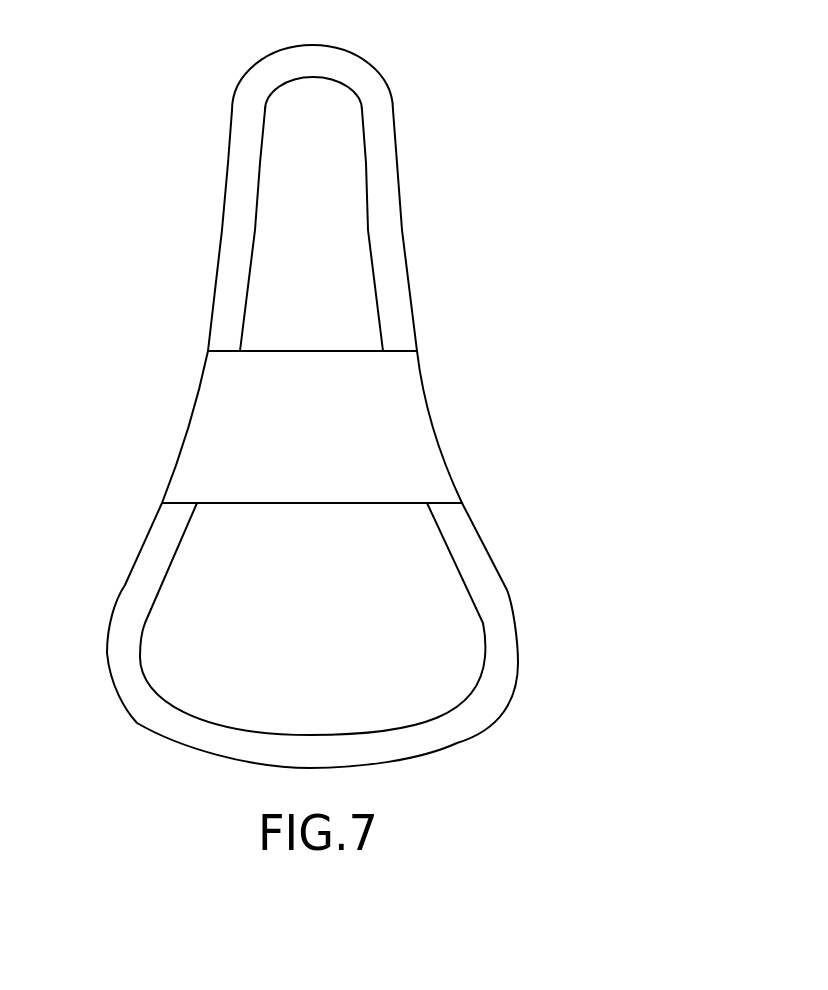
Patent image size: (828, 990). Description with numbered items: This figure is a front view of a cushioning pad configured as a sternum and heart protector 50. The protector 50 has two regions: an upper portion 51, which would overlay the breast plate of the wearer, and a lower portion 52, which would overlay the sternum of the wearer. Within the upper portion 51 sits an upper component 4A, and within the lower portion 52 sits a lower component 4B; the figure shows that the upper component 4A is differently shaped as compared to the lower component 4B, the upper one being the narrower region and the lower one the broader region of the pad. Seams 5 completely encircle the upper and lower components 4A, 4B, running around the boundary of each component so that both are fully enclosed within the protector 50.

The sternum and heart protector 50 is at (509, 264).
The seams 5 is at (383, 182).
The upper portion 51 is at (420, 77).
The lower portion 52 is at (552, 700).
The upper component 4A is at (297, 226).
The lower component 4B is at (326, 612).